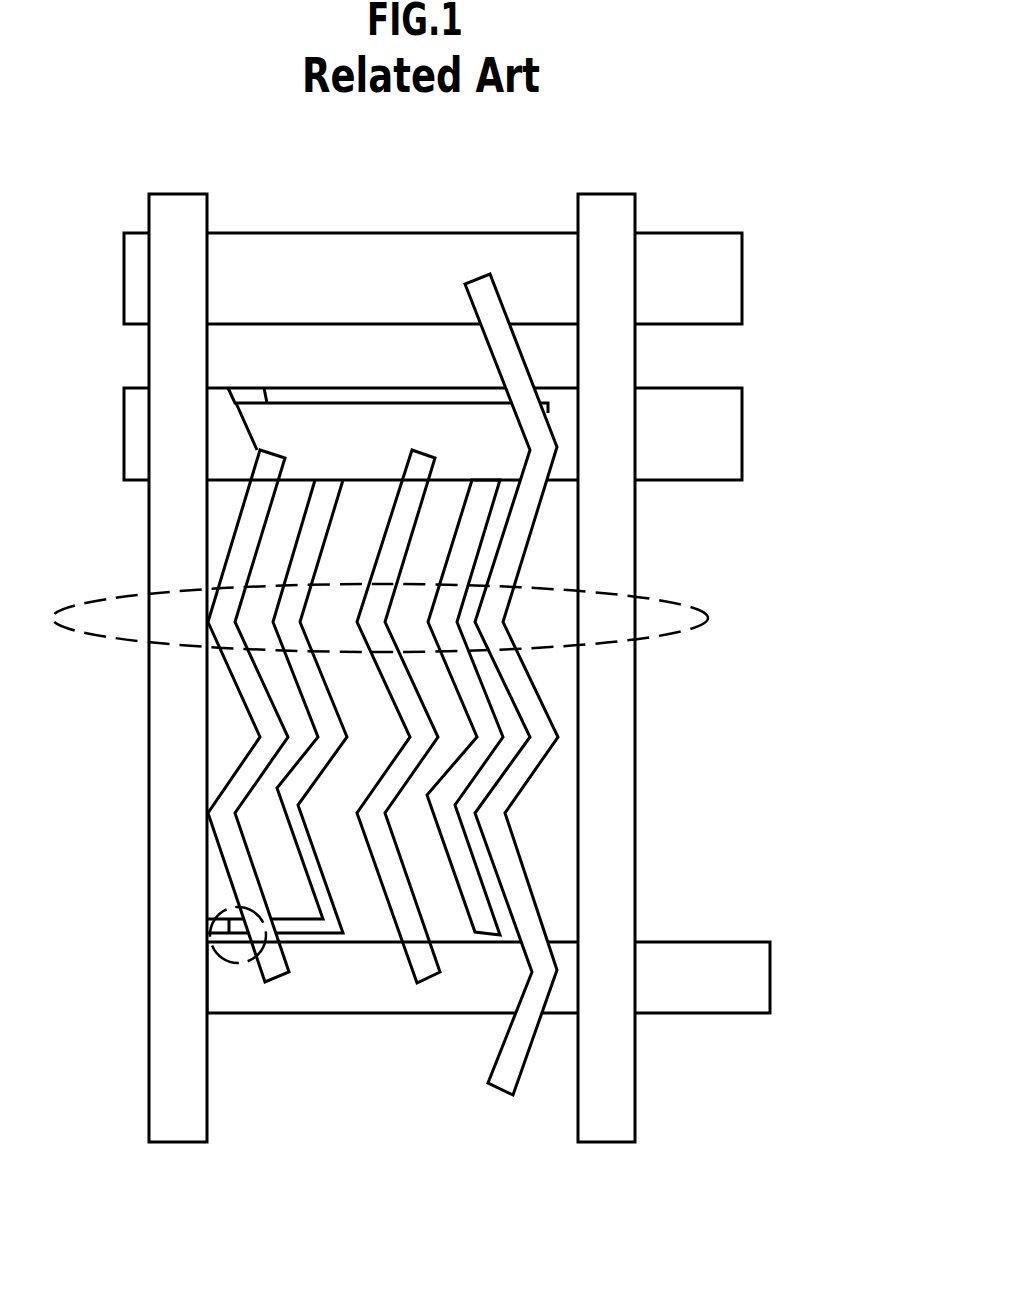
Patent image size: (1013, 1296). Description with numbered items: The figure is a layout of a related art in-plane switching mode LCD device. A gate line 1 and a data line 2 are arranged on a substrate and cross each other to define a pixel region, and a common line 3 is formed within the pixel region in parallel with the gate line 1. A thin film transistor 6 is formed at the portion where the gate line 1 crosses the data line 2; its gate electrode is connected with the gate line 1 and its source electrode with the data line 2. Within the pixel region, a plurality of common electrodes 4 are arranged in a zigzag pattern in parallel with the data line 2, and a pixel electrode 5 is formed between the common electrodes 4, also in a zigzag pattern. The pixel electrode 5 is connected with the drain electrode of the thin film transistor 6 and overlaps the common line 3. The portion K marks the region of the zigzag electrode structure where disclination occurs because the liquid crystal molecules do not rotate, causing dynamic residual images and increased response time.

The gate line 1 is at (713, 962).
The data line 2 is at (608, 217).
The common line 3 is at (712, 423).
The common electrodes 4 is at (512, 1058).
The pixel electrode 5 is at (323, 927).
The thin film transistor 6 is at (235, 965).
The portion K is at (670, 602).